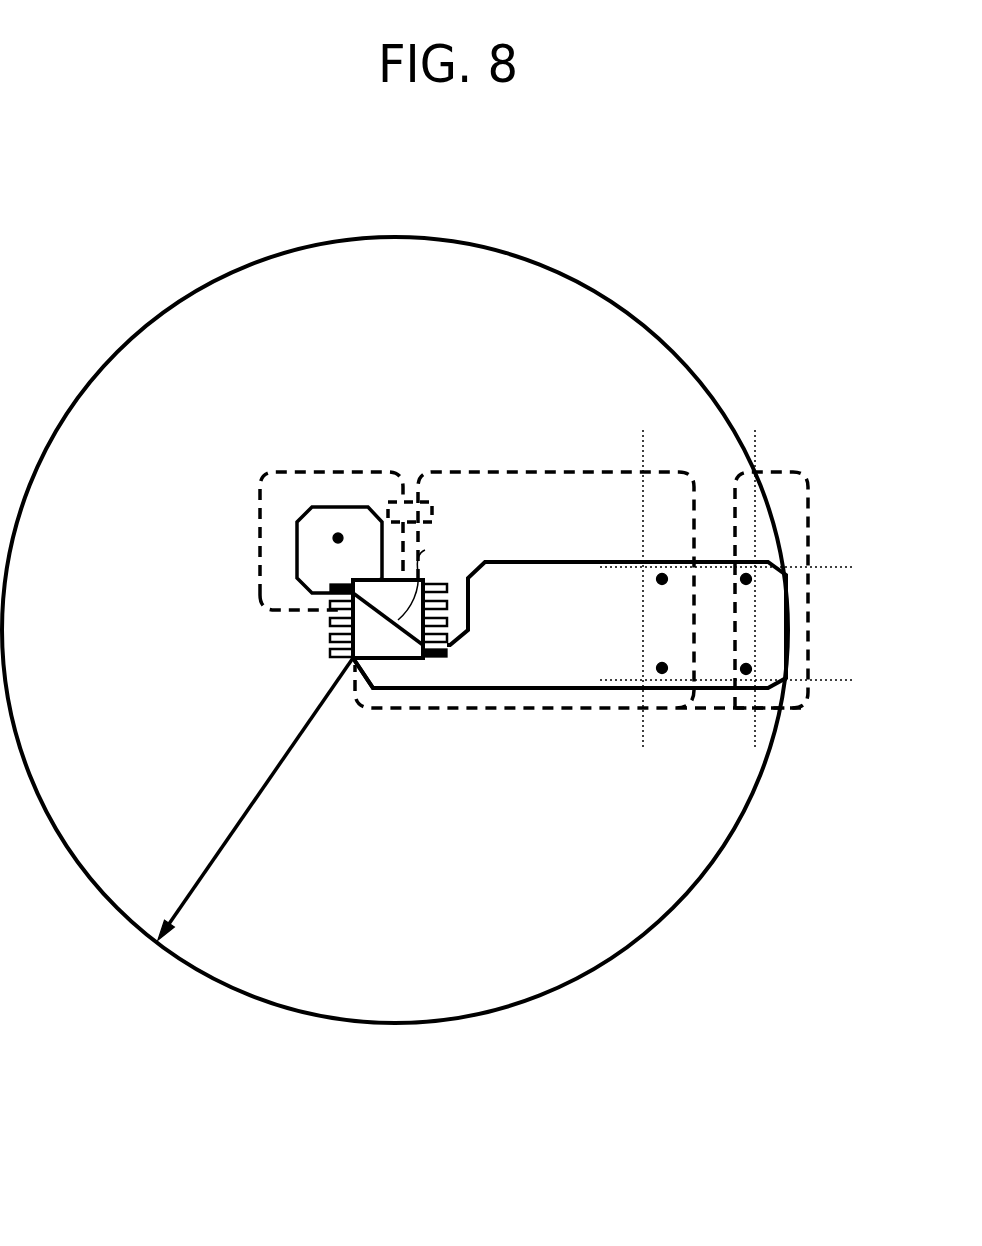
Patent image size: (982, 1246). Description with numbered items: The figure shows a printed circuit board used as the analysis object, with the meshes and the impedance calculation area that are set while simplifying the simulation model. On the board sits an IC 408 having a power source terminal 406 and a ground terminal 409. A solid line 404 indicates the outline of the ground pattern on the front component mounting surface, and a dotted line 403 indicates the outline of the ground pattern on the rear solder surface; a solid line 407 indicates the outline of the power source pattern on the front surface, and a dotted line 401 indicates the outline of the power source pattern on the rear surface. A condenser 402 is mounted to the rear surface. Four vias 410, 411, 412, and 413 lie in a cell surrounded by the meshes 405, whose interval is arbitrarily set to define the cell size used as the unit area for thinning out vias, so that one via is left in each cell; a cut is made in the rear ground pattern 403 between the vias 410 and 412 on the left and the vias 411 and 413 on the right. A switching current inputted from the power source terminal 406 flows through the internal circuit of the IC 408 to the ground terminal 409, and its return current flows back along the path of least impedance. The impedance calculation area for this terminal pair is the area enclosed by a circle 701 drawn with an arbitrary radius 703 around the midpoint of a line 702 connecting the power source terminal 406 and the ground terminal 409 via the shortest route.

The circle 701 is at (580, 281).
The radius 703 is at (268, 790).
The power source pattern outline on rear surface 401 is at (334, 472).
The condenser 402 is at (403, 502).
The ground pattern outline on rear surface 403 is at (541, 472).
The ground pattern outline on front surface 404 is at (583, 562).
The meshes 405 is at (838, 567).
The power source terminal 406 is at (330, 590).
The power source pattern outline on front surface 407 is at (297, 557).
The IC 408 is at (395, 660).
The ground terminal 409 is at (447, 653).
The via 410 is at (662, 579).
The via 411 is at (746, 579).
The via 412 is at (662, 668).
The via 413 is at (746, 669).
The line 702 is at (425, 550).